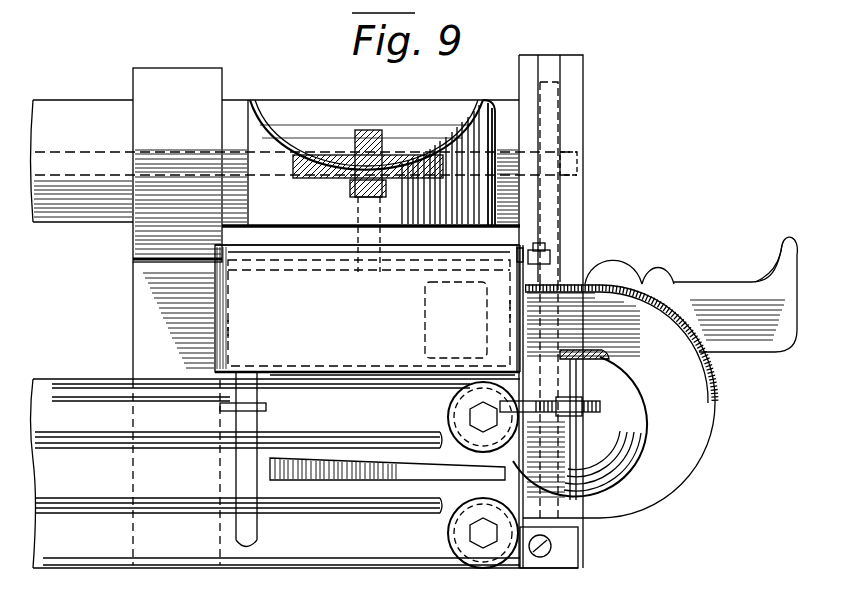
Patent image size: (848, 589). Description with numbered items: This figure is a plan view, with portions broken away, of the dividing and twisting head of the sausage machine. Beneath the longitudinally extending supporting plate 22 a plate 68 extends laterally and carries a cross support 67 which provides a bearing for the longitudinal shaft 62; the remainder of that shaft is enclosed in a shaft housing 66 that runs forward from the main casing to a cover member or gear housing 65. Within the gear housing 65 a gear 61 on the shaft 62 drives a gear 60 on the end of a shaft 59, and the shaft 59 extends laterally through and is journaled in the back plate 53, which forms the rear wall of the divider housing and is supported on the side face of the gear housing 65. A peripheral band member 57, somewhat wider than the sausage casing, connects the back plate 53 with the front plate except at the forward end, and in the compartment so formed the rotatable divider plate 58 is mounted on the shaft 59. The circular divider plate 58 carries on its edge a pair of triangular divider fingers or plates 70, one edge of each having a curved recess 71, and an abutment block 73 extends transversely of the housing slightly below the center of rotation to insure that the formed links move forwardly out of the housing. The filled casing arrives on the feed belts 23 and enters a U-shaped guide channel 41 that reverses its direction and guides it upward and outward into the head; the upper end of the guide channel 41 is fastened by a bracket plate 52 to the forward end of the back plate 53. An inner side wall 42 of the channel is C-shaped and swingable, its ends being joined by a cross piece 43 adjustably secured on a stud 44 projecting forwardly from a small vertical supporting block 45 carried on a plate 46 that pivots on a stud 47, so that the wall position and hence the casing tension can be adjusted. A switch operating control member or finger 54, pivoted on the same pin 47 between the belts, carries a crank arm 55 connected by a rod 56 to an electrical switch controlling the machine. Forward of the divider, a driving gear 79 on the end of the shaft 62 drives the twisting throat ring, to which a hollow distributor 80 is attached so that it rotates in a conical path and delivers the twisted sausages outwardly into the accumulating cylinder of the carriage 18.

The shaft housing 66 is at (60, 108).
The longitudinal shaft 62 is at (102, 158).
The cross support 67 is at (177, 78).
The gear 60 is at (320, 150).
The gear 61 is at (370, 127).
The cover member or gear housing 65 is at (438, 115).
The shaft 59 is at (370, 213).
The rotatable divider plate 58 is at (297, 265).
The peripheral band member 57 is at (383, 311).
The abutment block 73 is at (430, 335).
The divider fingers or plates 70 is at (228, 330).
The plate 68 is at (133, 311).
The longitudinally extending supporting plate 22 is at (33, 560).
The rod 56 is at (65, 401).
The crank arm 55 is at (220, 408).
The stud or pin 47 is at (262, 408).
The feed belts 23 is at (97, 463).
The switch operating control member or finger 54 is at (393, 477).
The plate 46 is at (392, 375).
The supporting block 45 is at (477, 398).
The driving gear 79 is at (560, 108).
The back plate 53 is at (503, 252).
The bracket plate 52 is at (553, 273).
The guide channel 41 is at (705, 397).
The curved recess 71 is at (627, 267).
The hollow distributor 80 is at (720, 287).
The inner side wall 42 is at (647, 400).
The cross piece 43 is at (550, 375).
The carriage 18 is at (560, 387).
The stud 44 is at (543, 412).